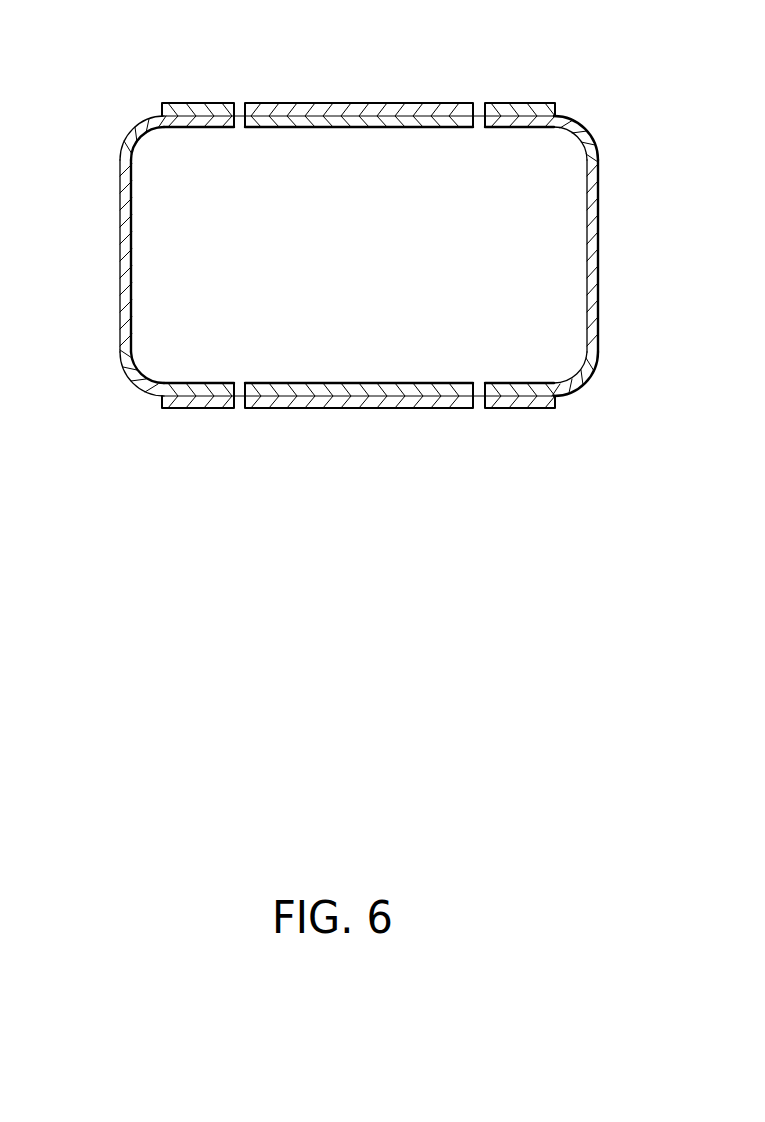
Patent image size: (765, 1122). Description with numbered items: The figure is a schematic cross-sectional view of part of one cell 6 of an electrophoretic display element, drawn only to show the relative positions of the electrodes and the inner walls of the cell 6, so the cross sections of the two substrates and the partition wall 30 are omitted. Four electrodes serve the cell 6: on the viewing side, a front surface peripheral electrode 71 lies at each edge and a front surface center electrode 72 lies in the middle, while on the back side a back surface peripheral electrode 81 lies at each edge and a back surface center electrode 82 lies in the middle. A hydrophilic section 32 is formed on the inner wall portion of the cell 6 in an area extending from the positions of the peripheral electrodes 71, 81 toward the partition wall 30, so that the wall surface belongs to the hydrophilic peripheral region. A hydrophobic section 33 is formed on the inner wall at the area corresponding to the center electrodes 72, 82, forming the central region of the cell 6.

The cell 6 is at (369, 270).
The partition wall 30 is at (120, 298).
The hydrophilic section 32 is at (131, 252).
The hydrophobic section 33 is at (397, 128).
The front surface peripheral electrode 71 is at (199, 103).
The front surface center electrode 72 is at (379, 103).
The back surface peripheral electrode 81 is at (197, 408).
The back surface center electrode 82 is at (378, 408).